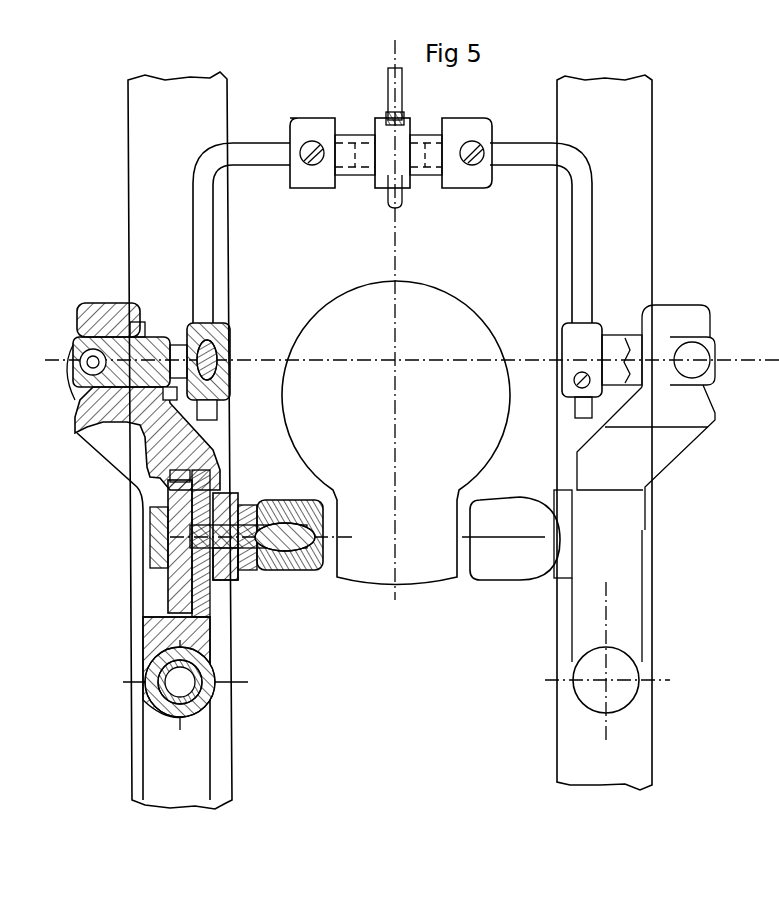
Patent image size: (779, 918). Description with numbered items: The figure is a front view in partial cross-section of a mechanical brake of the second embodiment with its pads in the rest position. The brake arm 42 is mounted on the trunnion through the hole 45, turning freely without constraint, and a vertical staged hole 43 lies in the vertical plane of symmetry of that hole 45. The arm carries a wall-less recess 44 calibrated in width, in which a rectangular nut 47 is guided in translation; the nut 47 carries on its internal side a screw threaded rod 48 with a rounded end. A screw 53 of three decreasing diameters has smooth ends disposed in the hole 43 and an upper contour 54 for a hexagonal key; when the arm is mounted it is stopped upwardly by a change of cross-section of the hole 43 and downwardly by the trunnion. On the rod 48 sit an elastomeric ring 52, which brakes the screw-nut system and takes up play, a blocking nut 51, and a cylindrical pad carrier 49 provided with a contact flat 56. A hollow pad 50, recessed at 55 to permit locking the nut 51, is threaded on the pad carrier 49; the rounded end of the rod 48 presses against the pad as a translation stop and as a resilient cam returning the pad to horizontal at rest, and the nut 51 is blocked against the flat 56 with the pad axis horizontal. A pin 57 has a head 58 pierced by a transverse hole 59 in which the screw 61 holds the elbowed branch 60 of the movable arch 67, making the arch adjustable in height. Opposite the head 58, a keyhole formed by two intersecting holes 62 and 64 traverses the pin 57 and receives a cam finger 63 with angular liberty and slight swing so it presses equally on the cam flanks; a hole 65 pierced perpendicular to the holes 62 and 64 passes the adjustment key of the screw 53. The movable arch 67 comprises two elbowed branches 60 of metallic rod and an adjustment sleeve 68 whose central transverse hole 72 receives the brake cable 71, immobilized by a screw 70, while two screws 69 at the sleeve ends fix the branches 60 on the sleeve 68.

The brake arm 42 is at (653, 509).
The staged hole 43 is at (168, 717).
The recess 44 is at (157, 602).
The hole 45 is at (217, 690).
The rectangular nut 47 is at (155, 562).
The screw threaded rod 48 is at (322, 567).
The cylindrical pad carrier 49 is at (305, 580).
The hollow pad 50 is at (487, 570).
The blocking nut 51 is at (238, 498).
The elastomeric ring 52 is at (225, 587).
The screw 53 is at (185, 500).
The contour for hexagonal key 54 is at (167, 477).
The recess of pad 55 is at (245, 568).
The contact flat 56 is at (245, 585).
The pin 57 is at (722, 352).
The head 58 is at (232, 340).
The hole 59 is at (562, 340).
The elbowed branch 60 is at (240, 305).
The screw 61 is at (578, 398).
The hole 62 is at (66, 332).
The cam finger 63 is at (75, 375).
The hole 64 is at (112, 392).
The hole 65 is at (170, 338).
The movable arch 67 is at (392, 186).
The adjustment sleeve 68 is at (478, 188).
The screws 69 is at (310, 165).
The screw 70 is at (390, 116).
The brake cable 71 is at (404, 88).
The transverse hole 72 is at (388, 180).